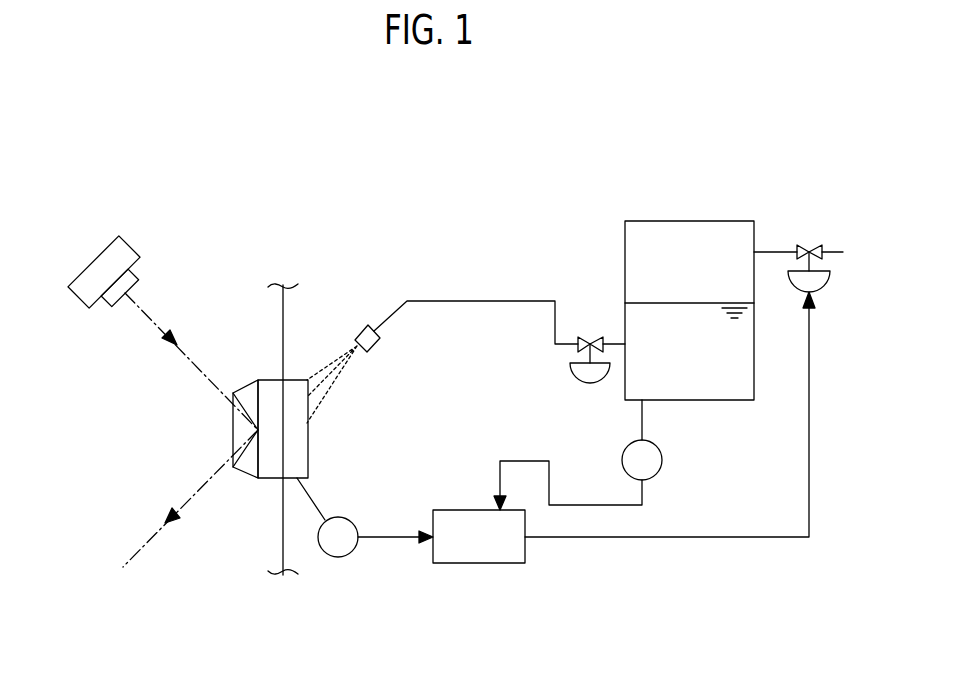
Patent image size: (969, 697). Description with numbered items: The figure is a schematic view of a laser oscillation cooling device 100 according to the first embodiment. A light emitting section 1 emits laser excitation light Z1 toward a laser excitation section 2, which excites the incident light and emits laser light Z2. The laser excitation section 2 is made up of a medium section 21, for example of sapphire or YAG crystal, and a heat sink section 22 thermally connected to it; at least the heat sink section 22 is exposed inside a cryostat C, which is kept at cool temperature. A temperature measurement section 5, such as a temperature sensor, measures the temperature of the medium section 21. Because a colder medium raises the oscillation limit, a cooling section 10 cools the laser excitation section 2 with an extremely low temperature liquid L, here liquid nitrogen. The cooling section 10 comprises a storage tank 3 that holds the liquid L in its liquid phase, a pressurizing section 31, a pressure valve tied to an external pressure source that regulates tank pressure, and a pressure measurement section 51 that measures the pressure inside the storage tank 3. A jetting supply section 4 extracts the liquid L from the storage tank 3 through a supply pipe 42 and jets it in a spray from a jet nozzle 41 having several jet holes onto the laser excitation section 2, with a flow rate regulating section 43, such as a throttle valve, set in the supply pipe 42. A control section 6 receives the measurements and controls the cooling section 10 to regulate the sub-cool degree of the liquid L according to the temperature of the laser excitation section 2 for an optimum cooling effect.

The laser oscillation cooling device 100 is at (105, 232).
The light emitting section 1 is at (124, 250).
The laser excitation section 2 is at (213, 301).
The medium section 21 is at (267, 380).
The heat sink section 22 is at (305, 380).
The jetting supply section 4 is at (425, 281).
The jet nozzle 41 is at (366, 325).
The supply pipe 42 is at (517, 301).
The flow rate regulating section 43 is at (590, 382).
The cooling section 10 is at (628, 188).
The storage tank 3 is at (755, 383).
The pressurizing section 31 is at (817, 283).
The pressure measurement section 51 is at (663, 457).
The temperature measurement section 5 is at (332, 557).
The control section 6 is at (490, 550).
The cryostat C is at (283, 545).
The extremely low temperature liquid L is at (340, 382).
The laser excitation light Z1 is at (158, 338).
The laser light Z2 is at (193, 493).